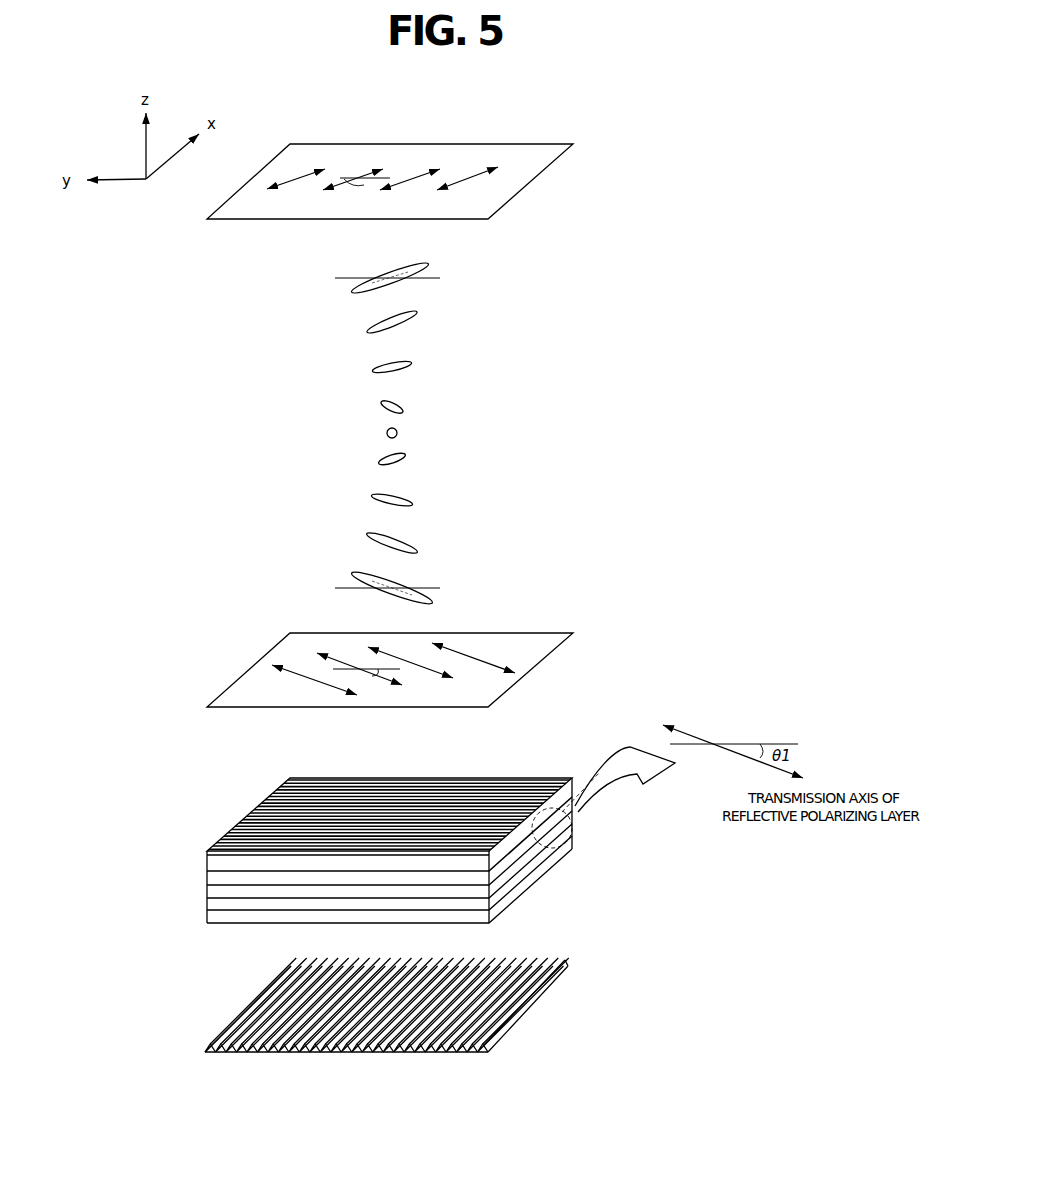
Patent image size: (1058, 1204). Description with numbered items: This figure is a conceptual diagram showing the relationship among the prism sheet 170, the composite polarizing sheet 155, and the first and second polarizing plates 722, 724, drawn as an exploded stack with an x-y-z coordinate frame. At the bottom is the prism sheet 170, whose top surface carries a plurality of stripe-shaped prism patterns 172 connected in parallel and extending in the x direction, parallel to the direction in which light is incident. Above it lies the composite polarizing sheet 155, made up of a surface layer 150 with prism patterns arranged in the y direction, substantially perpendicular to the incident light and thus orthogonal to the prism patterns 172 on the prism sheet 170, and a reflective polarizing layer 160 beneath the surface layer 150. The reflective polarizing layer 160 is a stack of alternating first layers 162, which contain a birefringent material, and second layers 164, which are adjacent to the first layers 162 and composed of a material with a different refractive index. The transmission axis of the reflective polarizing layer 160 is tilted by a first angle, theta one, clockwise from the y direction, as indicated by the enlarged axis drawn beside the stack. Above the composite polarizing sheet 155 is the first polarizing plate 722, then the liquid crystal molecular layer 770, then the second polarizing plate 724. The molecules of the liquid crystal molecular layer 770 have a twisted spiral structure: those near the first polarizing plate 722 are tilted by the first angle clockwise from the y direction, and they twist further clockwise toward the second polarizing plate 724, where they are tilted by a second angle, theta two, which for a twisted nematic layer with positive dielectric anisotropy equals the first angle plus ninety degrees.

The second polarizing plate 724 is at (523, 168).
The first polarizing plate 722 is at (523, 657).
The liquid crystal molecular layer 770 is at (506, 251).
The composite polarizing sheet 155 is at (360, 843).
The surface layer 150 is at (237, 838).
The reflective polarizing layer 160 is at (332, 875).
The first layer 162 is at (214, 902).
The second layer 164 is at (214, 915).
The prism sheet 170 is at (425, 993).
The prism patterns 172 is at (555, 965).